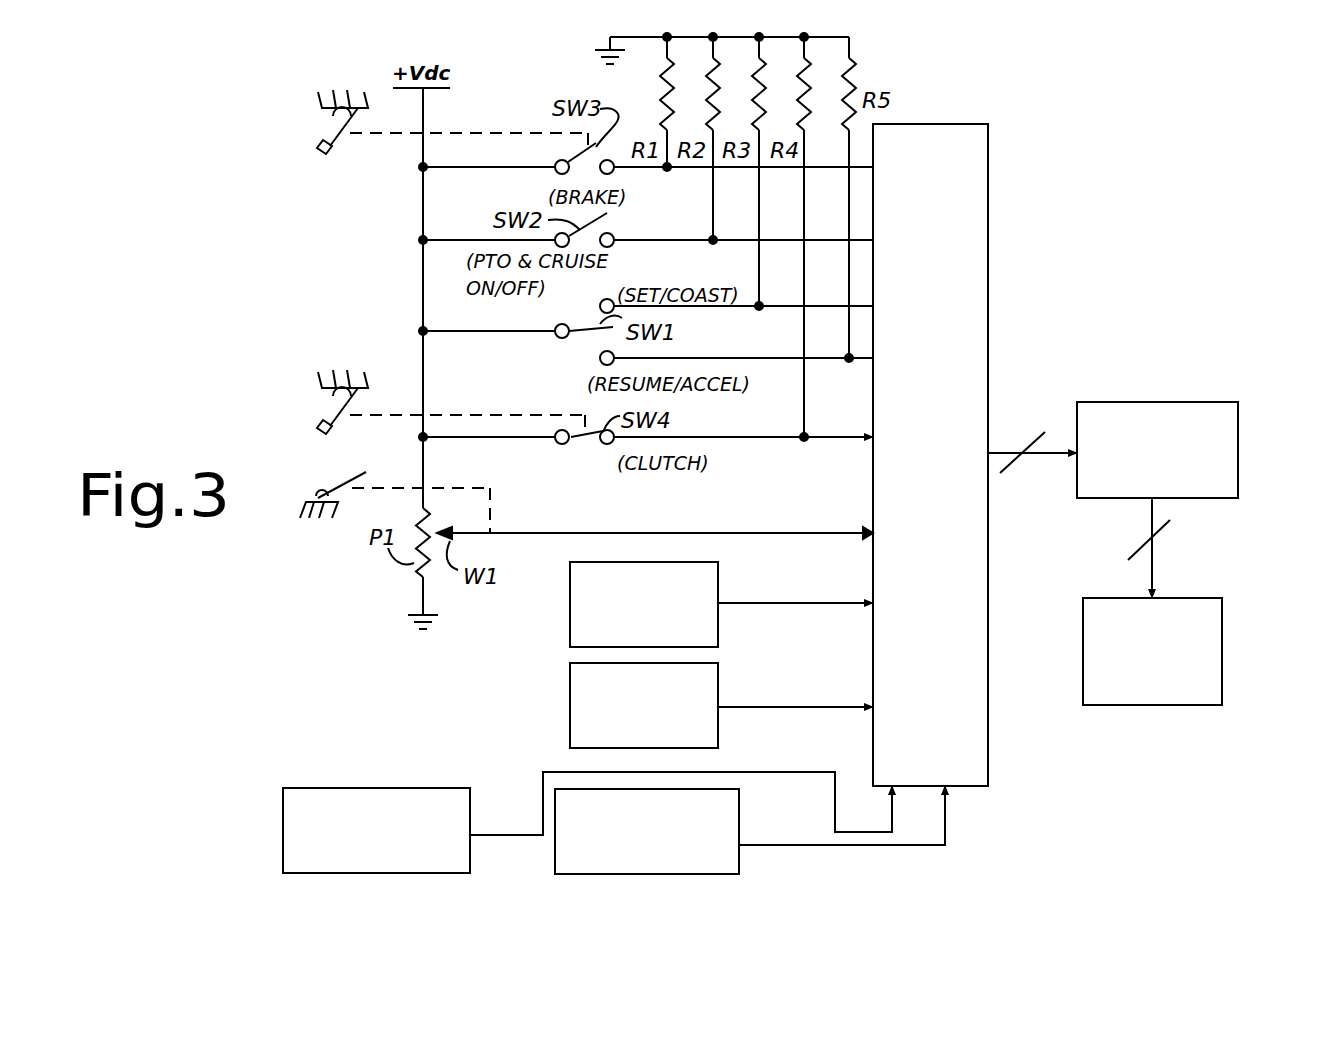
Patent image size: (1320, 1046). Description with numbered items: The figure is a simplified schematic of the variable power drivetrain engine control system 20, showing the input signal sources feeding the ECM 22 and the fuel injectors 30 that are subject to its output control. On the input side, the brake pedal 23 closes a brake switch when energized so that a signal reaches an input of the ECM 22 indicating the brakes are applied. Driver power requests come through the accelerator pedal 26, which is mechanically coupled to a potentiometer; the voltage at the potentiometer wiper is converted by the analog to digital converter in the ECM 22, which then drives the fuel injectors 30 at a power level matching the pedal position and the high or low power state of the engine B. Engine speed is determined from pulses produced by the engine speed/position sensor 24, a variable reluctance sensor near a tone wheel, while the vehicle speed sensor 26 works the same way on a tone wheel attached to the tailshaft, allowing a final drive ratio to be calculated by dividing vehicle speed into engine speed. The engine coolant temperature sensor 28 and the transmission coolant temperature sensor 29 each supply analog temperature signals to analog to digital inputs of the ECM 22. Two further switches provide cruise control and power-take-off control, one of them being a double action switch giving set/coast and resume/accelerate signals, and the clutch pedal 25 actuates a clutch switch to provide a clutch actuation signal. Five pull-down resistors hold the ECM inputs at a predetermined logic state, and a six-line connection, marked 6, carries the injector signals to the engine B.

The VPD engine control system 20 is at (375, 677).
The ECM 22 is at (910, 124).
The brake pedal 23 is at (340, 126).
The engine speed/position sensor 24 is at (570, 598).
The clutch pedal 25 is at (340, 406).
The accelerator pedal 26 is at (332, 486).
The engine coolant temperature sensor 28 is at (555, 853).
The transmission coolant temperature sensor 29 is at (283, 816).
The fuel injectors 30 is at (1238, 438).
The six-line bus 6 is at (1089, 514).
The engine B is at (1083, 670).